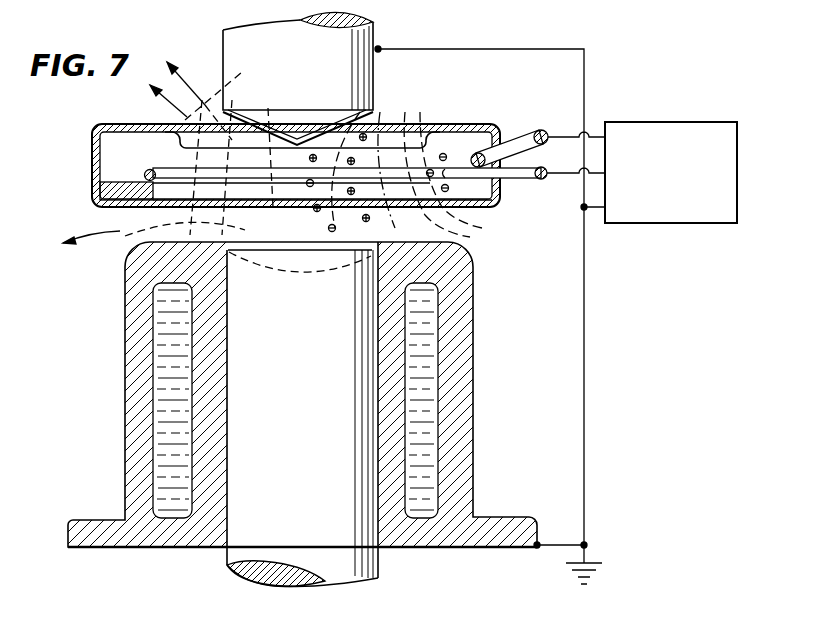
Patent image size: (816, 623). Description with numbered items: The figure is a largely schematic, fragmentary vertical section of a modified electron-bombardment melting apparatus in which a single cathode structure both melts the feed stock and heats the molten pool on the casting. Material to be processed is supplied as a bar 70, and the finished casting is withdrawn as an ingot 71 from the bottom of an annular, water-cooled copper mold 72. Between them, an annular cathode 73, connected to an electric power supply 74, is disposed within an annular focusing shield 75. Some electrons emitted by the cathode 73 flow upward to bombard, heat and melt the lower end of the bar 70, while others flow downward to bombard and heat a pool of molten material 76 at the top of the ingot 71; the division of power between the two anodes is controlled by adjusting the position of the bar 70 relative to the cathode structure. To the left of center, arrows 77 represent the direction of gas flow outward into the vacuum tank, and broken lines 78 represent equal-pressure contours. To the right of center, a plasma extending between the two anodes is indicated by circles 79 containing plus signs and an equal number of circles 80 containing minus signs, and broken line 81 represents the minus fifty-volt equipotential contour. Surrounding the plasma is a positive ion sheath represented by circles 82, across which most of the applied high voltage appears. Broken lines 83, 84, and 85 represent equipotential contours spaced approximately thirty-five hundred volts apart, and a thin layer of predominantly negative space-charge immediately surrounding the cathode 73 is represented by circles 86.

The bar 70 is at (229, 44).
The ingot 71 is at (296, 452).
The annular water-cooled copper mold 72 is at (470, 370).
The annular cathode 73 is at (151, 170).
The electric power supply 74 is at (663, 120).
The annular focusing shield 75 is at (93, 165).
The pool of molten material 76 is at (279, 270).
The arrows 77 is at (192, 70).
The broken lines 78 is at (218, 96).
The circles containing plus signs 79 is at (312, 158).
The circles containing minus signs 80 is at (309, 183).
The broken line 81 is at (369, 219).
The circles 82 is at (355, 191).
The broken line 83 is at (393, 108).
The broken line 84 is at (413, 110).
The broken line 85 is at (430, 120).
The circles 86 is at (444, 157).